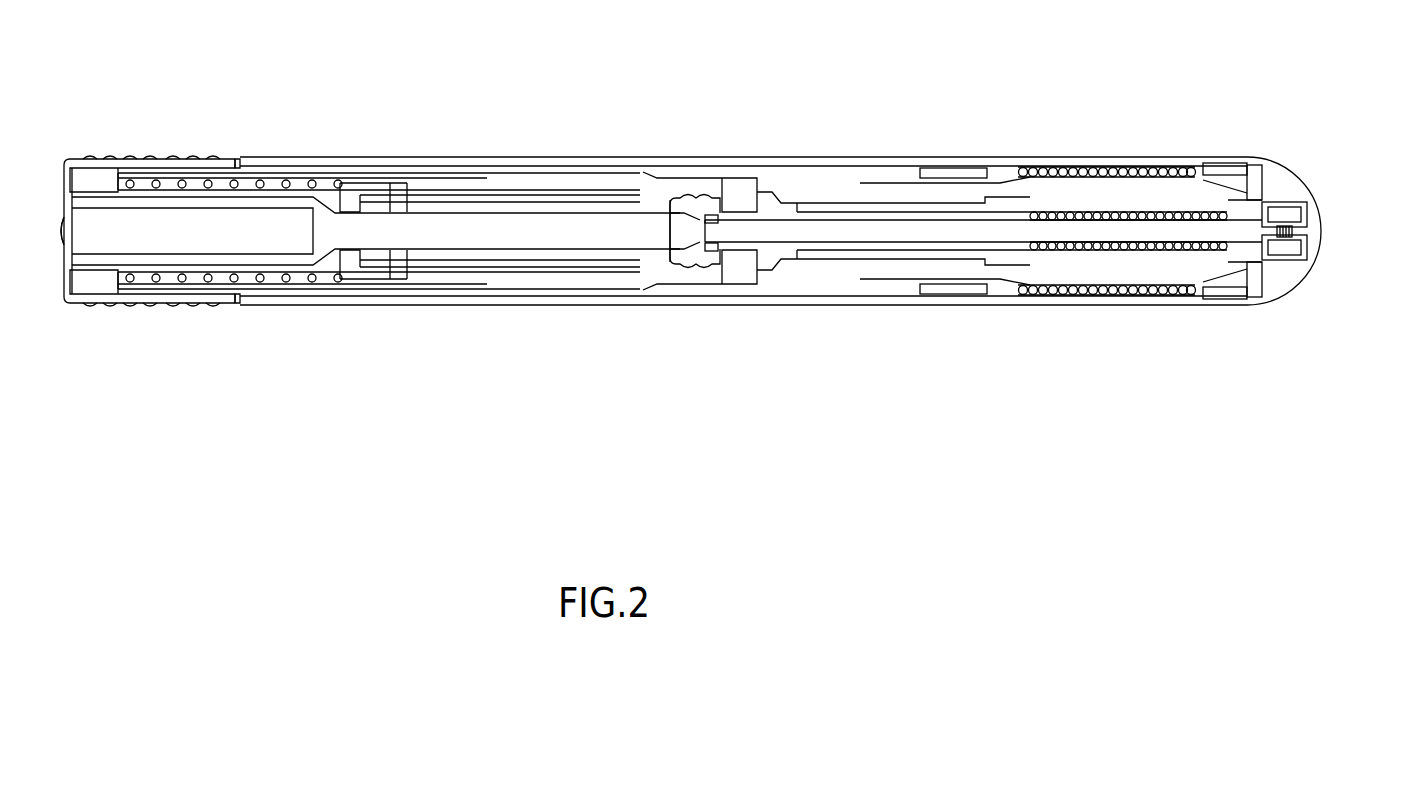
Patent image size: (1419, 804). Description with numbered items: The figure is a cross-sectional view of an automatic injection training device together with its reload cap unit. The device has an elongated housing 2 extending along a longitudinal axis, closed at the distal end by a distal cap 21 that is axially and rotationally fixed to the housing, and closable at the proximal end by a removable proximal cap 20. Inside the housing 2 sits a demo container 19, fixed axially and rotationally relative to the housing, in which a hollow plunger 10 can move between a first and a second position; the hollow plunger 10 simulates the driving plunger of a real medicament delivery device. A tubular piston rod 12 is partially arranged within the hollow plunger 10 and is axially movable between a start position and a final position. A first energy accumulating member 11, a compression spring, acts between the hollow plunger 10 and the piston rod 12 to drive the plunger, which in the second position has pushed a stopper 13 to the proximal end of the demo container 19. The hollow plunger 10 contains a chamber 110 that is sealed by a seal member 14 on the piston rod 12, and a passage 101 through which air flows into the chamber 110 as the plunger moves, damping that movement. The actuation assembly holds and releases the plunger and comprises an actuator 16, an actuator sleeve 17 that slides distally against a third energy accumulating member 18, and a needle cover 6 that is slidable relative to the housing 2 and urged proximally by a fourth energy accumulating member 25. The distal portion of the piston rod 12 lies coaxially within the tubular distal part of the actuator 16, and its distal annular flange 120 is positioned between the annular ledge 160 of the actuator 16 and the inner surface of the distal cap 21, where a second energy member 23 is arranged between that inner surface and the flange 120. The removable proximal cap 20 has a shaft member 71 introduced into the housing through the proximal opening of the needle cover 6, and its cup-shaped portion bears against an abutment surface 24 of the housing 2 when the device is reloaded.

The elongated housing 2 is at (292, 162).
The needle cover 6 is at (235, 170).
The hollow plunger 10 is at (870, 253).
The first energy accumulating member 11 is at (1046, 218).
The piston rod 12 is at (930, 227).
The stopper 13 is at (703, 258).
The seal member 14 is at (715, 218).
The actuator 16 is at (1203, 273).
The actuator sleeve 17 is at (1003, 178).
The third energy accumulating member 18 is at (1122, 172).
The demo container 19 is at (398, 260).
The removable proximal cap 20 is at (170, 307).
The distal cap 21 is at (1270, 283).
The second energy member 23 is at (1293, 242).
The abutment surface 24 is at (241, 307).
The fourth energy accumulating member 25 is at (140, 183).
The shaft member 71 is at (503, 233).
The passage 101 is at (663, 232).
The chamber 110 is at (686, 235).
The distal annular flange 120 is at (1273, 203).
The annular ledge 160 is at (1227, 207).